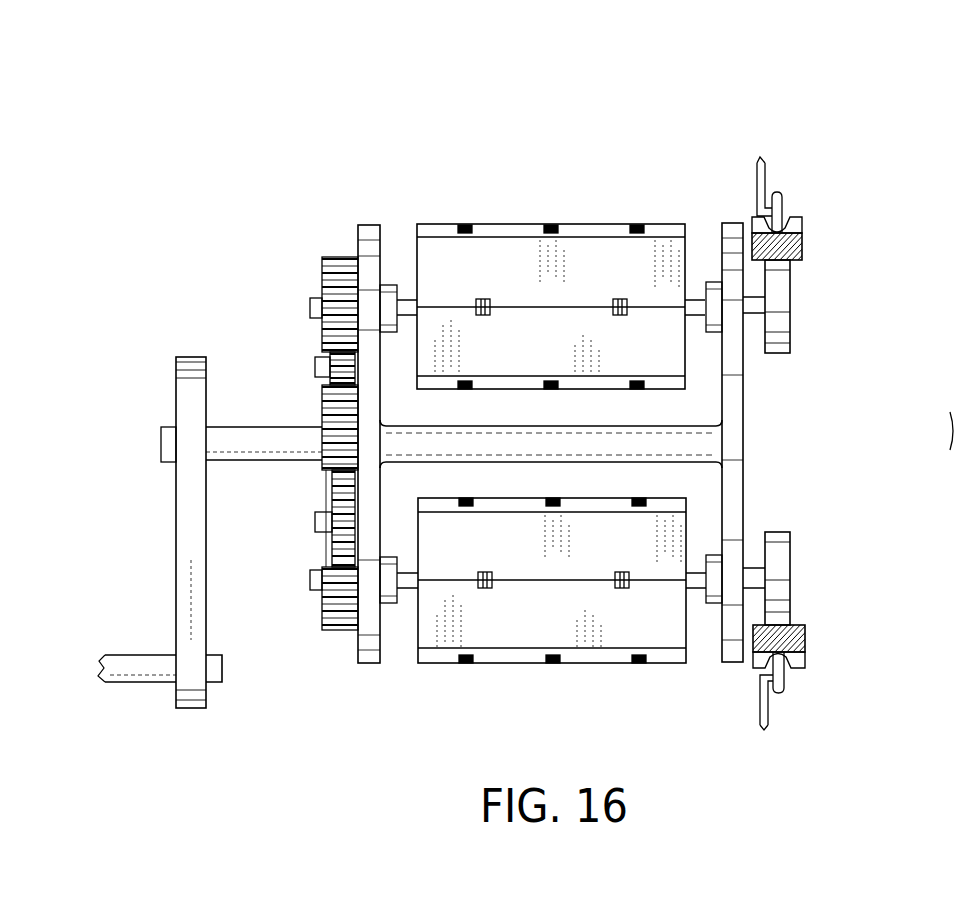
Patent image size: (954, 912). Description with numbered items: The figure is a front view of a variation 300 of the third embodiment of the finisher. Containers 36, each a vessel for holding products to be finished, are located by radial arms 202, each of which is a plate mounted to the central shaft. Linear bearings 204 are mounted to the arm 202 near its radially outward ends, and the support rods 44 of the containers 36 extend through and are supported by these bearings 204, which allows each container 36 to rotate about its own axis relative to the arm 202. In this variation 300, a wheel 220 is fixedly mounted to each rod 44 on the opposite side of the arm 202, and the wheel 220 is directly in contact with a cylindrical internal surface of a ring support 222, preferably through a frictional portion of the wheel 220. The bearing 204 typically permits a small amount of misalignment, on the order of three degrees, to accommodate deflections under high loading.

The variation of the third embodiment 300 is at (843, 154).
The radial arm 202 is at (366, 225).
The linear bearing 204 is at (388, 292).
The container 36 is at (597, 220).
The support rod 44 is at (753, 307).
The wheel 220 is at (780, 295).
The ring support 222 is at (802, 248).